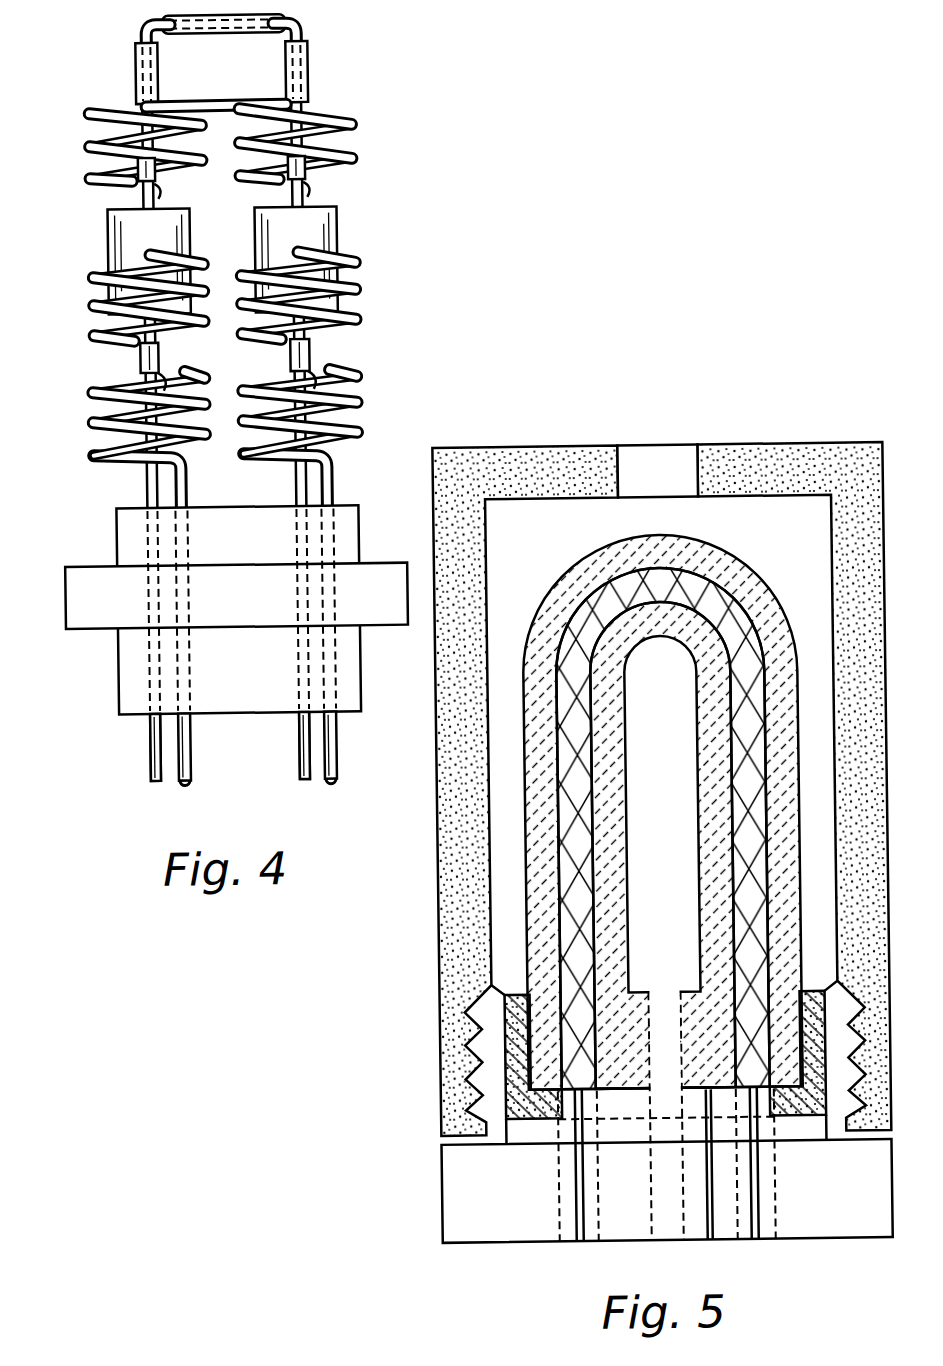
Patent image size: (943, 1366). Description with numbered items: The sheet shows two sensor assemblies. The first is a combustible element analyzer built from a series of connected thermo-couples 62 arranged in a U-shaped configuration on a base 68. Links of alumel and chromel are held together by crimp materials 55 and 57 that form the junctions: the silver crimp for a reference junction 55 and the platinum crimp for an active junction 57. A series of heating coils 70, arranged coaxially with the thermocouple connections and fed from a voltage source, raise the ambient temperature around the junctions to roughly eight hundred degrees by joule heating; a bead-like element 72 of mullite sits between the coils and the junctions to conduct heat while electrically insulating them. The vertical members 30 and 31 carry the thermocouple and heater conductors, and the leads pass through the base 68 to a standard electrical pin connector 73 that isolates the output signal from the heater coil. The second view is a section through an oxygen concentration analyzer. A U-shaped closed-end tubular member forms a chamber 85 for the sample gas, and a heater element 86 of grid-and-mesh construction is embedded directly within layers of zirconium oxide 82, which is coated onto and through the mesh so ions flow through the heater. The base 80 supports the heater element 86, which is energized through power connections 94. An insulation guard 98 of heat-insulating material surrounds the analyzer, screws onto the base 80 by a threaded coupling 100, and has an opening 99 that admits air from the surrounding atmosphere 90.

In FIG. 4, the lead wire rod 30 is at (146, 200).
In FIG. 4, the conductor tube 31 is at (308, 24).
In FIG. 4, the crimp for a reference junction 55 is at (138, 167).
In FIG. 4, the crimp for an active junction 57 is at (308, 170).
In FIG. 4, the series of connected thermo-couples 62 is at (402, 165).
In FIG. 4, the base 68 is at (226, 546).
In FIG. 4, the heating coils 70 is at (350, 128).
In FIG. 4, the bead-like element 72 is at (110, 232).
In FIG. 4, the electrical pin connector 73 is at (296, 742).
In FIG. 5, the base 80 is at (483, 1194).
In FIG. 5, the zirconium oxide 82 is at (545, 612).
In FIG. 5, the chamber 85 is at (649, 862).
In FIG. 5, the heater element 86 is at (742, 790).
In FIG. 5, the surrounding atmosphere 90 is at (768, 418).
In FIG. 5, the power connections 94 is at (571, 1240).
In FIG. 5, the insulation guard 98 is at (543, 445).
In FIG. 5, the opening 99 is at (656, 462).
In FIG. 5, the threaded coupling 100 is at (443, 1068).